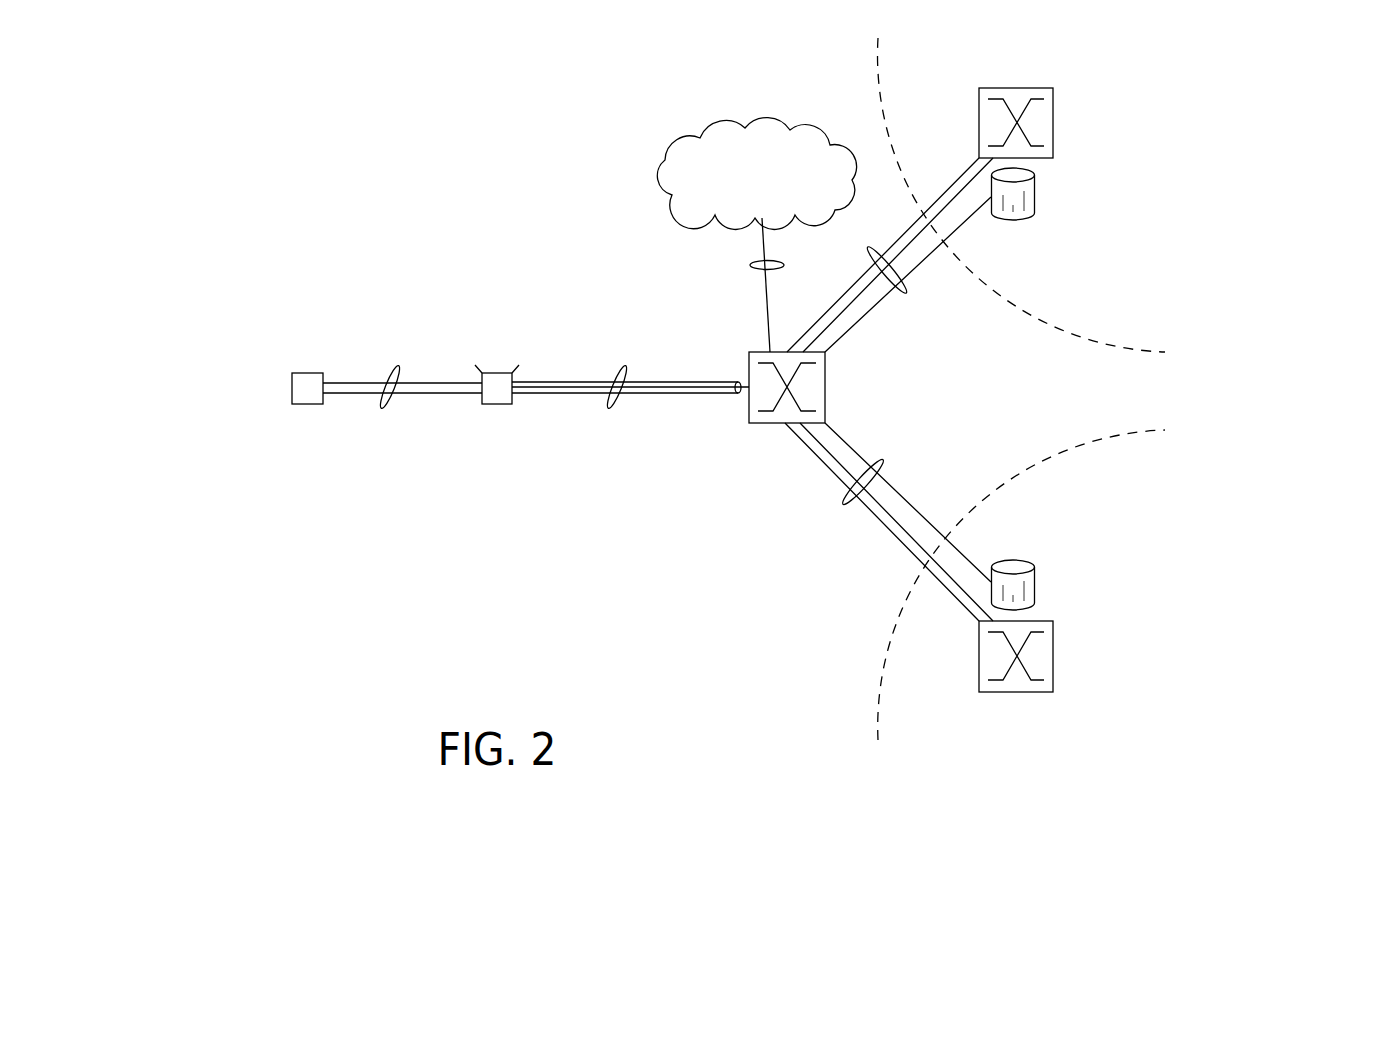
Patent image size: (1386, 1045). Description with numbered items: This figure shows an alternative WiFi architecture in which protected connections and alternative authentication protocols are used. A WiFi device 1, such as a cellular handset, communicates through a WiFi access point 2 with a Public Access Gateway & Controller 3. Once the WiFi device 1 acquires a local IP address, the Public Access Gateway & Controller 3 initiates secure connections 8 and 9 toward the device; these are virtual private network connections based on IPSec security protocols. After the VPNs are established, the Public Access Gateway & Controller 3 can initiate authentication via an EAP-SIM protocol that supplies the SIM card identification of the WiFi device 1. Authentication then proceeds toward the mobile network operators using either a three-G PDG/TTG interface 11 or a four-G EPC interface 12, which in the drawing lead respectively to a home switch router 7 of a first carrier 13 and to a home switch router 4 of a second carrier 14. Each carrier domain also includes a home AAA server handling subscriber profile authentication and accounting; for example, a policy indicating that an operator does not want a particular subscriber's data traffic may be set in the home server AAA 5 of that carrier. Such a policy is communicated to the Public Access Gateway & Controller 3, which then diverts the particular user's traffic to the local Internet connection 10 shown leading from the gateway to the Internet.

The WiFi device 1 is at (308, 373).
The WiFi access point 2 is at (503, 374).
The Public Access Gateway & Controller 3 is at (825, 388).
The home switch router (4G domain) 4 is at (978, 663).
The home server AAA 5 is at (1013, 560).
The home switch router (3G domain) 7 is at (979, 113).
The secure connection 8 is at (400, 368).
The secure connection 9 is at (627, 368).
The local Internet connection 10 is at (752, 265).
The 3G PDG/TTG interface 11 is at (905, 293).
The 4G EPC interface 12 is at (845, 503).
The carrier 1 13 is at (1166, 294).
The carrier 2 14 is at (1140, 513).